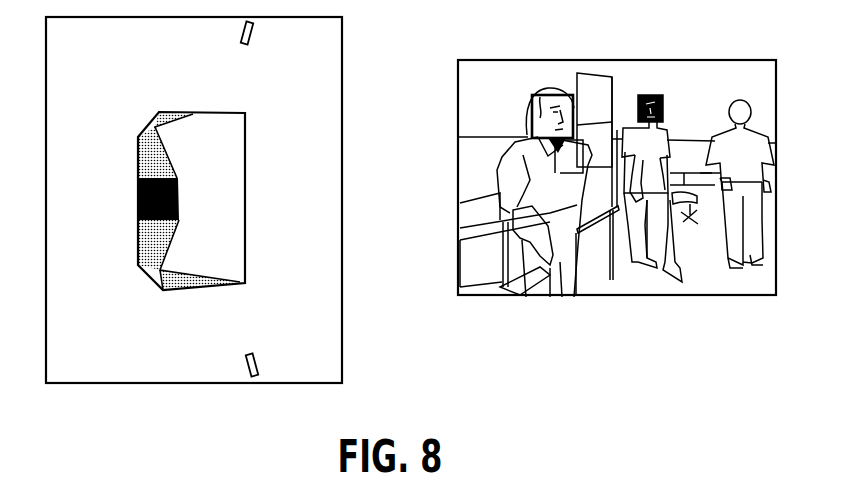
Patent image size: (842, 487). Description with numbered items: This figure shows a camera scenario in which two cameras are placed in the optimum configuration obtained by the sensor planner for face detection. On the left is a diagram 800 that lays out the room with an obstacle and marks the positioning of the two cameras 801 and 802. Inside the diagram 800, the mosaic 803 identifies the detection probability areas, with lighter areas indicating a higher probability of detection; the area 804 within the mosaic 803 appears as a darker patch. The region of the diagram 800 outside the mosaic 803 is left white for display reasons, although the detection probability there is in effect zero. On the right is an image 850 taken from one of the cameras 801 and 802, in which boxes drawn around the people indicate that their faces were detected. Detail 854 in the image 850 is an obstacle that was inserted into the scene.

The diagram 800 is at (177, 200).
The camera 801 is at (263, 33).
The camera 802 is at (269, 363).
The mosaic 803 is at (208, 201).
The highlighted region 804 is at (126, 202).
The image 850 is at (617, 165).
The inserted obstacle 854 is at (600, 95).